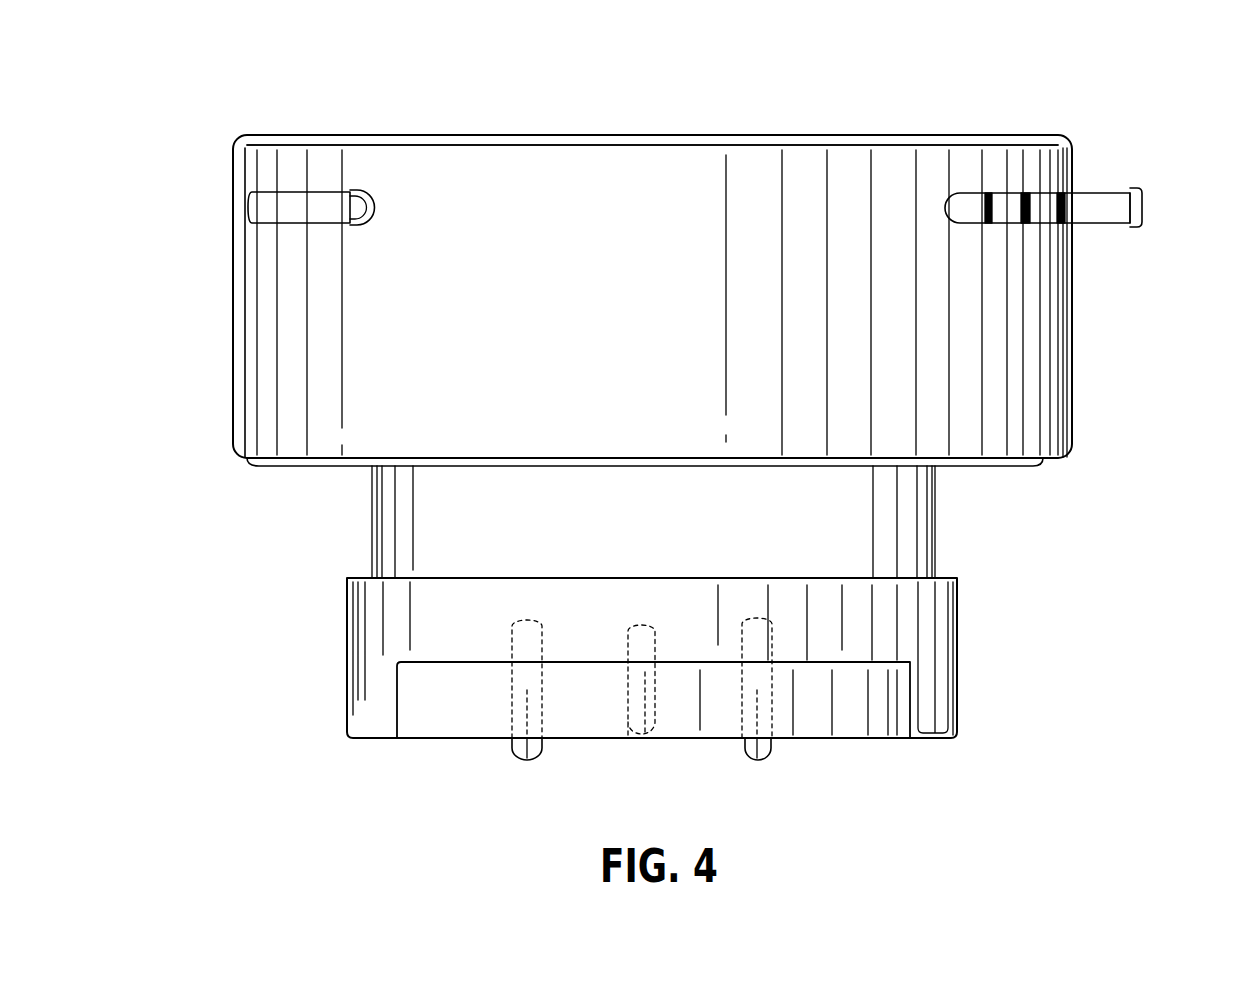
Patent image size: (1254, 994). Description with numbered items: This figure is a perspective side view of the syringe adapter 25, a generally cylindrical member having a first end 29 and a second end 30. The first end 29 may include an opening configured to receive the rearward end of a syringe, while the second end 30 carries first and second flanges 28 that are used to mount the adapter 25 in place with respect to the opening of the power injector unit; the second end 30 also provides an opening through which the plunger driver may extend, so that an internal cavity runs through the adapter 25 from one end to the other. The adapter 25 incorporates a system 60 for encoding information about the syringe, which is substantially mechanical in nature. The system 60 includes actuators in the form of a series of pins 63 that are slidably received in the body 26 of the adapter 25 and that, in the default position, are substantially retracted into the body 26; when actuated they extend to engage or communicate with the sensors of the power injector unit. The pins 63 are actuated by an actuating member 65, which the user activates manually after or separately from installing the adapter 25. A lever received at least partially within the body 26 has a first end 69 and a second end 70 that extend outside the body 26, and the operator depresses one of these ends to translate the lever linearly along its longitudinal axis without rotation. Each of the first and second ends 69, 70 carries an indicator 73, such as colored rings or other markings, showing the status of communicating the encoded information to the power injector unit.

The adapter 25 is at (962, 398).
The body 26 is at (483, 310).
The flanges 28 is at (470, 710).
The first end 29 is at (195, 122).
The second end 30 is at (327, 757).
The system for encoding information 60 is at (1140, 162).
The pins 63 is at (525, 762).
The actuating member 65 is at (1105, 210).
The first end of lever 69 is at (293, 207).
The second end of lever 70 is at (1081, 205).
The indicator 73 is at (997, 205).